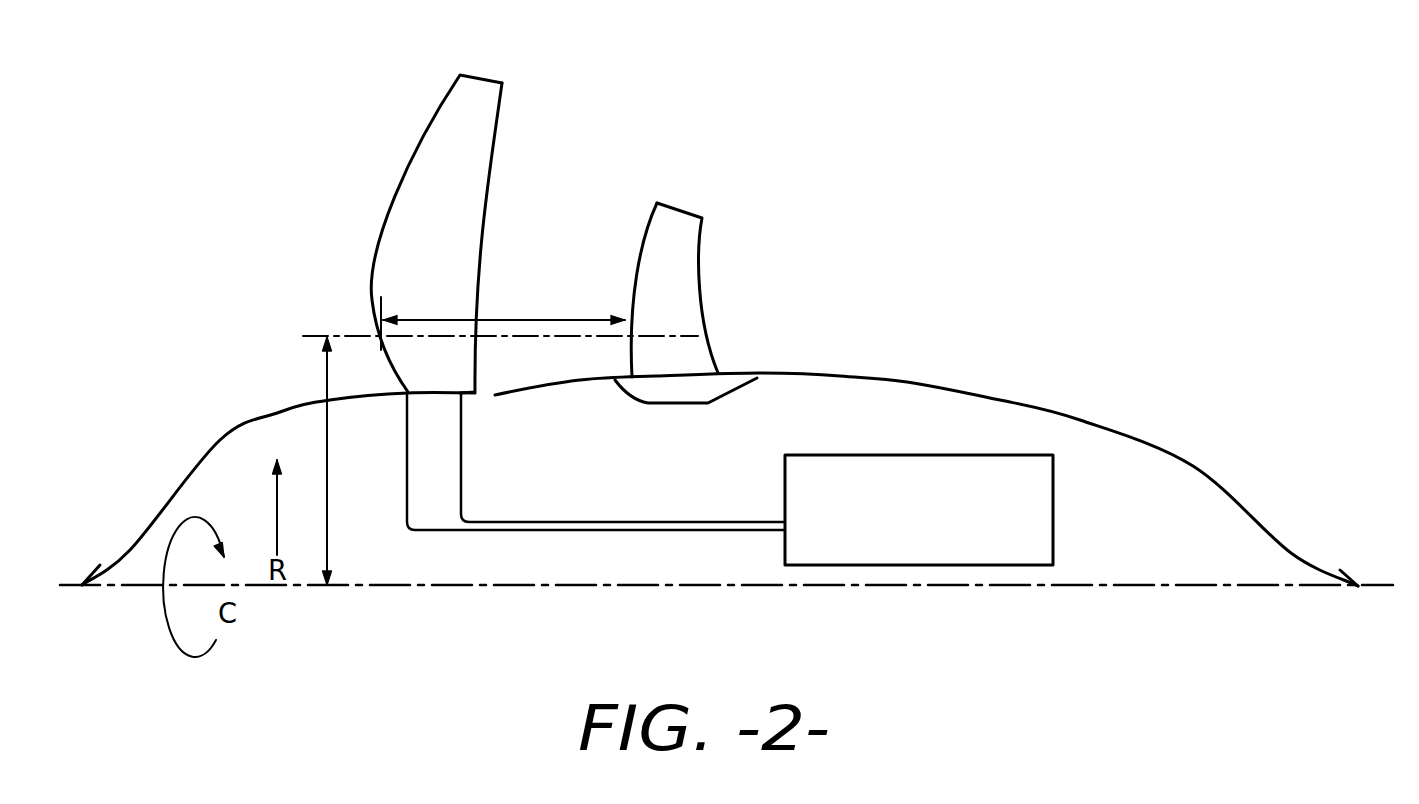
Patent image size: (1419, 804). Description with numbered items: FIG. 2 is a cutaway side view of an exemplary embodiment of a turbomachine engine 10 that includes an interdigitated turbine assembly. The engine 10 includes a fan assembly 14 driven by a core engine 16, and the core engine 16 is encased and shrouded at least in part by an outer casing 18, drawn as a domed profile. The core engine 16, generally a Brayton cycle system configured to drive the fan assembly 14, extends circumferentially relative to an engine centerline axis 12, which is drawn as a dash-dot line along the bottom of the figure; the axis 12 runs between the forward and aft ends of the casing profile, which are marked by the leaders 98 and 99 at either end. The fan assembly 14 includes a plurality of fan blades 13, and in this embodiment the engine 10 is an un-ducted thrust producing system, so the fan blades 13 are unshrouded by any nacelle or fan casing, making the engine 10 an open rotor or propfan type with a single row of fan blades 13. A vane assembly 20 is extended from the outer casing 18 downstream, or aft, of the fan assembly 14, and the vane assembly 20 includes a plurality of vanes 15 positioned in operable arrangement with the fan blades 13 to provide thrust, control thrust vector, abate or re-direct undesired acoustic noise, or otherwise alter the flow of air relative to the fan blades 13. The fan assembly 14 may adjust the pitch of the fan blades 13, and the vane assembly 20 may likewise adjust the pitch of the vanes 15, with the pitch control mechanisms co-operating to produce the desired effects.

The engine 10 is at (1099, 218).
The engine centerline axis 12 is at (408, 588).
The fan blades 13 is at (457, 160).
The fan assembly 14 is at (421, 234).
The vanes 15 is at (657, 265).
The core engine 16 is at (929, 528).
The outer casing 18 is at (907, 382).
The vane assembly 20 is at (704, 292).
The forward end of hub 98 is at (80, 585).
The aft end of hub 99 is at (1363, 584).